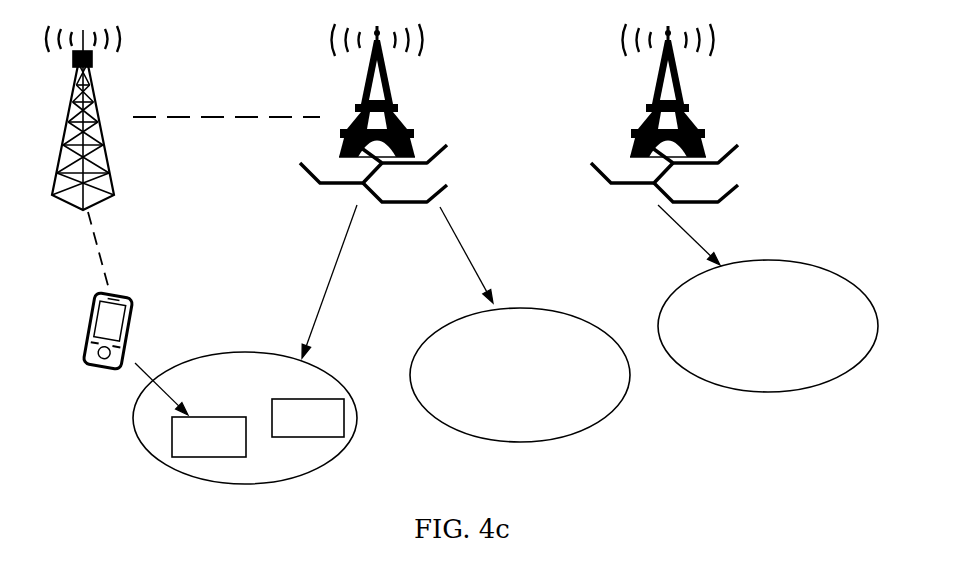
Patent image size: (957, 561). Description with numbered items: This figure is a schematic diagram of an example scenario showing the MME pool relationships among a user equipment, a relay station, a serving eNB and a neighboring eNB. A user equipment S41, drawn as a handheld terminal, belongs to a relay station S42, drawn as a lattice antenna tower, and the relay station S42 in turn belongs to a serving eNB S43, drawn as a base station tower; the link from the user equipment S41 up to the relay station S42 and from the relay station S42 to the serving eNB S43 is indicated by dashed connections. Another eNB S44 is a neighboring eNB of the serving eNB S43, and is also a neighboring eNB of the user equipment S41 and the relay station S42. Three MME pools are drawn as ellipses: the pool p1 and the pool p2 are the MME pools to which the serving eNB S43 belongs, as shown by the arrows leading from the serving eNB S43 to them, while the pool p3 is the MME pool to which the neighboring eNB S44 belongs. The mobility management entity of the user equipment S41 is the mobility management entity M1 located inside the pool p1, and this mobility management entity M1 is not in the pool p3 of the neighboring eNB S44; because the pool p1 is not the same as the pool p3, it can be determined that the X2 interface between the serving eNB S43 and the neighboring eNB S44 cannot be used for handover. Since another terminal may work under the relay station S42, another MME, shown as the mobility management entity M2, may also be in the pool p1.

The user equipment S41 is at (128, 340).
The relay station S42 is at (122, 80).
The serving eNB S43 is at (438, 92).
The neighboring eNB S44 is at (727, 92).
The MME pool p1 is at (245, 418).
The MME pool p2 is at (520, 375).
The MME pool p3 is at (768, 326).
The mobility management entity M1 is at (209, 437).
The mobility management entity M2 is at (308, 418).